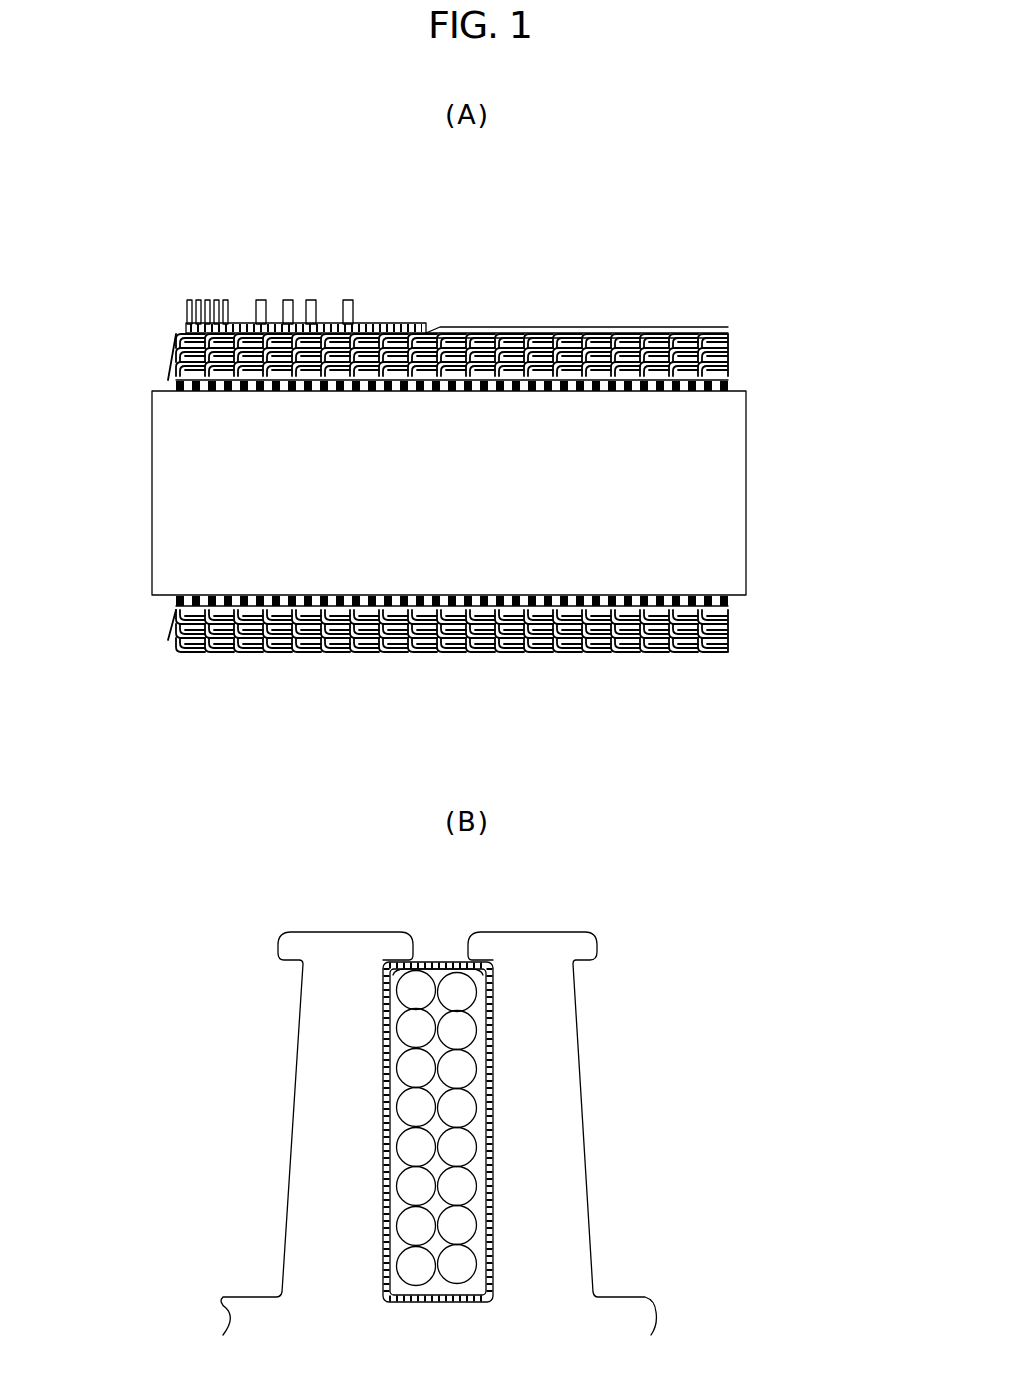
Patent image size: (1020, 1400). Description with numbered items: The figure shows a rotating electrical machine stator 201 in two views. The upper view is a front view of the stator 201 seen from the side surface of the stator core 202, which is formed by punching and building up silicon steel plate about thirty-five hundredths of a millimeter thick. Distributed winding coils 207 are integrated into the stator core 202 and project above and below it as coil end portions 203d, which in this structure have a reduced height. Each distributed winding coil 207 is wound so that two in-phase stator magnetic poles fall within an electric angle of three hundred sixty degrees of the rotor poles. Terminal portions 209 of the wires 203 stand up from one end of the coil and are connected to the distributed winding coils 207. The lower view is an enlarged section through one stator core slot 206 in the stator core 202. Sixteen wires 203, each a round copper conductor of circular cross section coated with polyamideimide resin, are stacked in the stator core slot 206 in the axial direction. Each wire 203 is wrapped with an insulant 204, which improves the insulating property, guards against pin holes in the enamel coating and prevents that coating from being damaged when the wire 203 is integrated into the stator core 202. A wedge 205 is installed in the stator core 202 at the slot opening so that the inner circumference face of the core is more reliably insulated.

The stator 201 is at (682, 222).
The stator core 202 is at (706, 512).
The wire 203 is at (403, 323).
The coil end portion 203d is at (772, 335).
The insulant 204 is at (178, 383).
The wedge 205 is at (447, 962).
The stator core slot 206 is at (492, 1137).
The distributed winding coil 207 is at (520, 332).
The terminal portion 209 is at (362, 270).